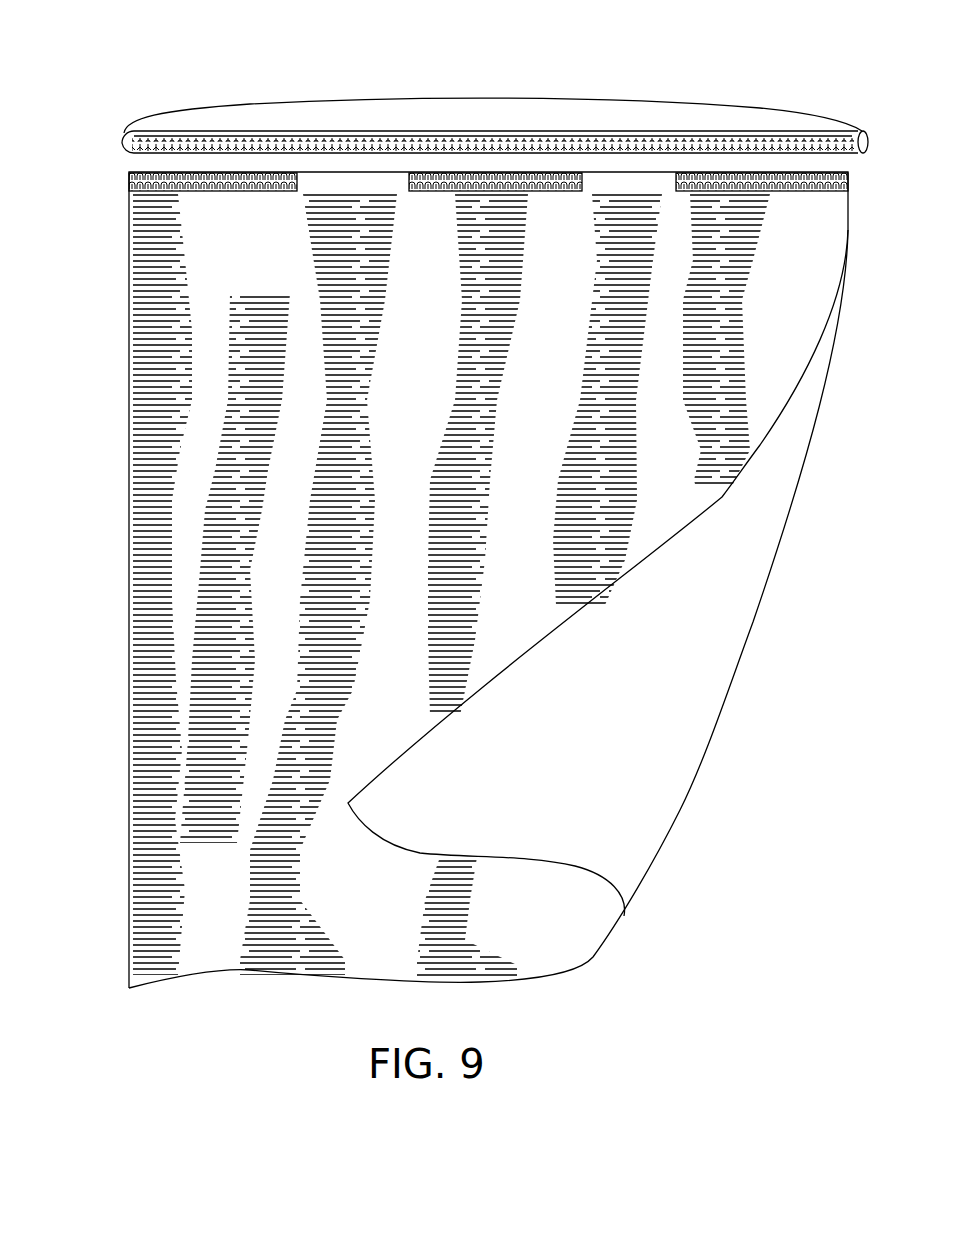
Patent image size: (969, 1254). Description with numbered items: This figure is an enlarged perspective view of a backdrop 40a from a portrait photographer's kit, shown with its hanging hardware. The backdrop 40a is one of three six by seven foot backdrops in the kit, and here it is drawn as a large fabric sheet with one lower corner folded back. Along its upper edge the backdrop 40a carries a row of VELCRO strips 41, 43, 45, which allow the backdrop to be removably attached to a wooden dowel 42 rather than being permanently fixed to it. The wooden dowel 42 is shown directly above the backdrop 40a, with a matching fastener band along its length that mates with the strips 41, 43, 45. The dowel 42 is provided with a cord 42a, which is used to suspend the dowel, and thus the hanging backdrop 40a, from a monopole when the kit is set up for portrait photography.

The backdrop 40a is at (252, 638).
The VELCRO strip 41 is at (128, 190).
The wooden dowel 42 is at (124, 140).
The cord 42a is at (643, 99).
The VELCRO strip 43 is at (547, 190).
The VELCRO strip 45 is at (780, 184).